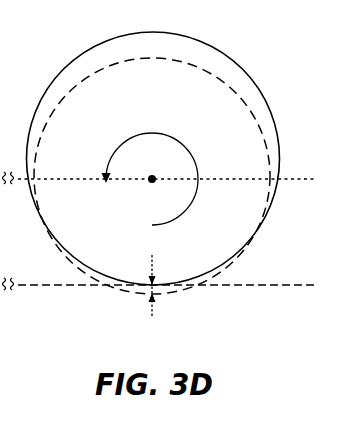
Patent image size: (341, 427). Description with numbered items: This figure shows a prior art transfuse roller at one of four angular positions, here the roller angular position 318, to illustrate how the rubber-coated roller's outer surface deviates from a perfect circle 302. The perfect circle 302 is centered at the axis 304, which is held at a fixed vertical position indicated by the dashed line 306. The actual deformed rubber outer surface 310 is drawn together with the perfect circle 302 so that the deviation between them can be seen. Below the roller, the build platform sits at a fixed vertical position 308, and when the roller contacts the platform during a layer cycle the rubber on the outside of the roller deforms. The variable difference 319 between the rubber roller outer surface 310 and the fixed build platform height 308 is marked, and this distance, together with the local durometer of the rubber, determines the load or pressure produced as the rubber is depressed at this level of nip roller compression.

The deformed rubber outer surface 310 is at (102, 47).
The perfect circle 302 is at (191, 292).
The axis 304 is at (150, 186).
The dashed line 306 is at (299, 180).
The fixed vertical position 308 is at (300, 288).
The roller angular position 318 is at (180, 209).
The variable difference 319 is at (150, 283).